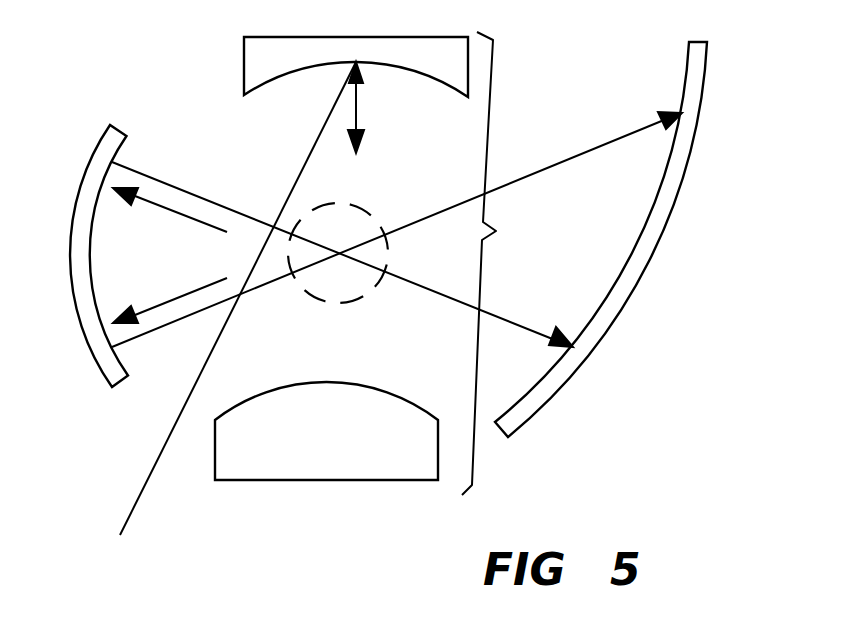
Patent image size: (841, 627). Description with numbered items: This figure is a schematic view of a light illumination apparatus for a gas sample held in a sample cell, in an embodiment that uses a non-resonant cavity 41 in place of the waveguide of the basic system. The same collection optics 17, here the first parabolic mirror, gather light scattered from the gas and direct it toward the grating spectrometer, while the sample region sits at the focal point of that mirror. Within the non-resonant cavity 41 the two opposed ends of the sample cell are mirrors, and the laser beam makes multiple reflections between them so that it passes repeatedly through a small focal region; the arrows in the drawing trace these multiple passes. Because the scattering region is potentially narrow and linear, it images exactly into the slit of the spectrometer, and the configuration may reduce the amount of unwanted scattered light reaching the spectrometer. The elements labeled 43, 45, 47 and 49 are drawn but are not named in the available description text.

The collection optics 17 is at (665, 232).
The non-resonant cavity 41 is at (500, 263).
The beam splitter 43 is at (142, 497).
The concave mirror 45 is at (258, 60).
The concave mirror 47 is at (280, 468).
The sample region 49 is at (355, 217).